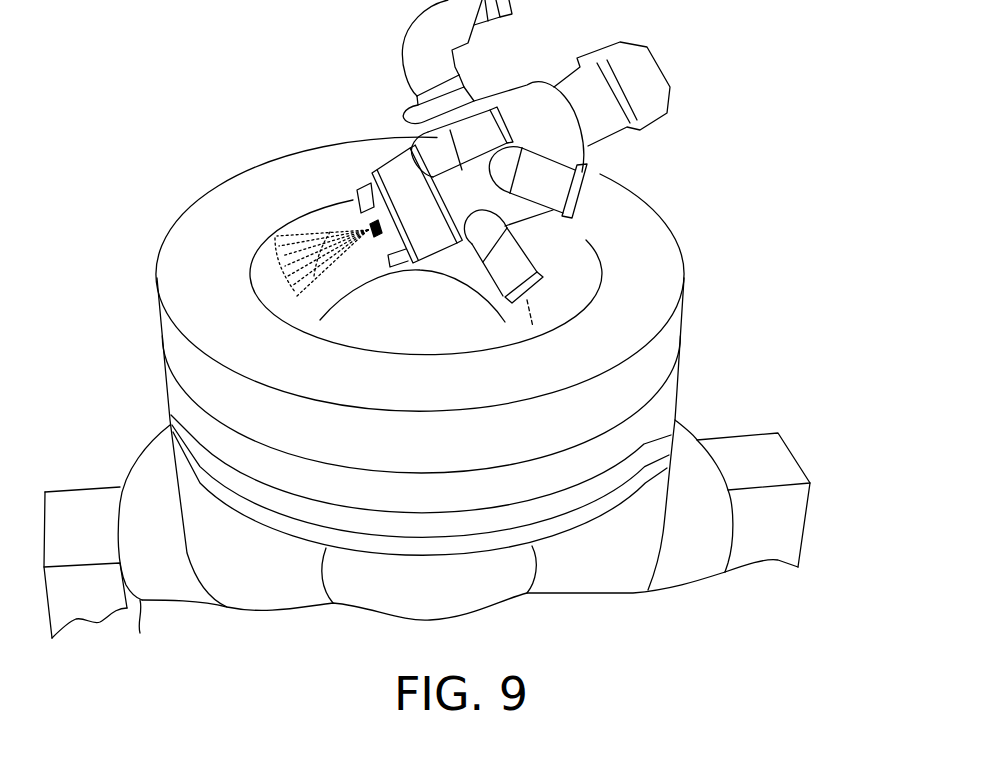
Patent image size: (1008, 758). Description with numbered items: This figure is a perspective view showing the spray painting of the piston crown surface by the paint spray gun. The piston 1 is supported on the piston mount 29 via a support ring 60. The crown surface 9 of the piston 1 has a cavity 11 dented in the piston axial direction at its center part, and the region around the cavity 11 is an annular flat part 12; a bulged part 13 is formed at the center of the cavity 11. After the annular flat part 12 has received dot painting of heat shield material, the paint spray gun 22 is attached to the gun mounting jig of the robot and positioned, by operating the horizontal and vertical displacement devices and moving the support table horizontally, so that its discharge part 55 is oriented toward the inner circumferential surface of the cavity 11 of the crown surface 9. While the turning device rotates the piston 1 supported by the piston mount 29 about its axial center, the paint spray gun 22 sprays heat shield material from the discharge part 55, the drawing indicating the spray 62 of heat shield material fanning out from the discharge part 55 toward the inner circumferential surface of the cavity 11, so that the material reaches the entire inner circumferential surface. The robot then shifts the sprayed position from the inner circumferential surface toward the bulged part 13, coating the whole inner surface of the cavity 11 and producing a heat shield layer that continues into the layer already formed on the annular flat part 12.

The piston 1 is at (679, 342).
The crown surface 9 is at (270, 164).
The cavity 11 is at (565, 262).
The annular flat part 12 is at (637, 217).
The bulged part 13 is at (440, 283).
The paint spray gun 22 is at (426, 134).
The piston mount 29 is at (810, 518).
The heat shield material discharge part 55 is at (372, 228).
The support ring 60 is at (152, 490).
The spray 62 is at (303, 230).